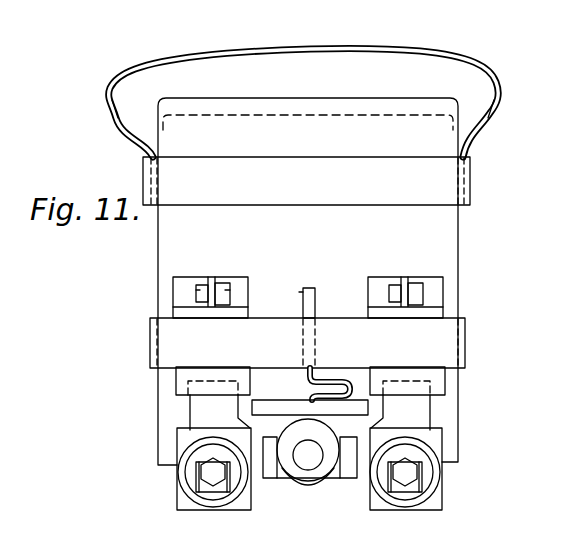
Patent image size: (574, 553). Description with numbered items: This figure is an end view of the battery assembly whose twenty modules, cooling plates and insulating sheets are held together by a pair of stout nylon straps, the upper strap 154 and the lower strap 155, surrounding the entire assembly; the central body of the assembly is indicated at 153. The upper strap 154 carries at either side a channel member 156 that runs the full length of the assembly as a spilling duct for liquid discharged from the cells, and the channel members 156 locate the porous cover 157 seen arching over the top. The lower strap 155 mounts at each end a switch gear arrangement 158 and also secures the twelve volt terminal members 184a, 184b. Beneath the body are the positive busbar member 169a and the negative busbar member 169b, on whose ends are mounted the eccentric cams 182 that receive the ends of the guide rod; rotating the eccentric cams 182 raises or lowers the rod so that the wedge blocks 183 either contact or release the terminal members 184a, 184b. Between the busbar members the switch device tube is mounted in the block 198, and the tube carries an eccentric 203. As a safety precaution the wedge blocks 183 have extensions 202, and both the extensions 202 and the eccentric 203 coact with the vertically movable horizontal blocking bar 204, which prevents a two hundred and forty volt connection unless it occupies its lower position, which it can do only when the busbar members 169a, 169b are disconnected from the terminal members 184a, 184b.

The porous cover 157 is at (395, 60).
The channel member 156 is at (492, 108).
The upper strap 154 is at (445, 170).
The body / container 153 is at (435, 233).
The lower strap 155 is at (437, 340).
The 12 volt positive terminal member 184a is at (180, 291).
The 12 volt terminal member 184b is at (440, 294).
The switch gear arrangement 158 is at (150, 382).
The wedge block 183 is at (200, 408).
The extension 202 is at (195, 410).
The eccentric cam 182 is at (185, 473).
The positive busbar member 169a is at (185, 505).
The negative busbar member 169b is at (445, 504).
The eccentric 203 is at (270, 480).
The block 198 is at (345, 472).
The blocking bar 204 is at (400, 410).